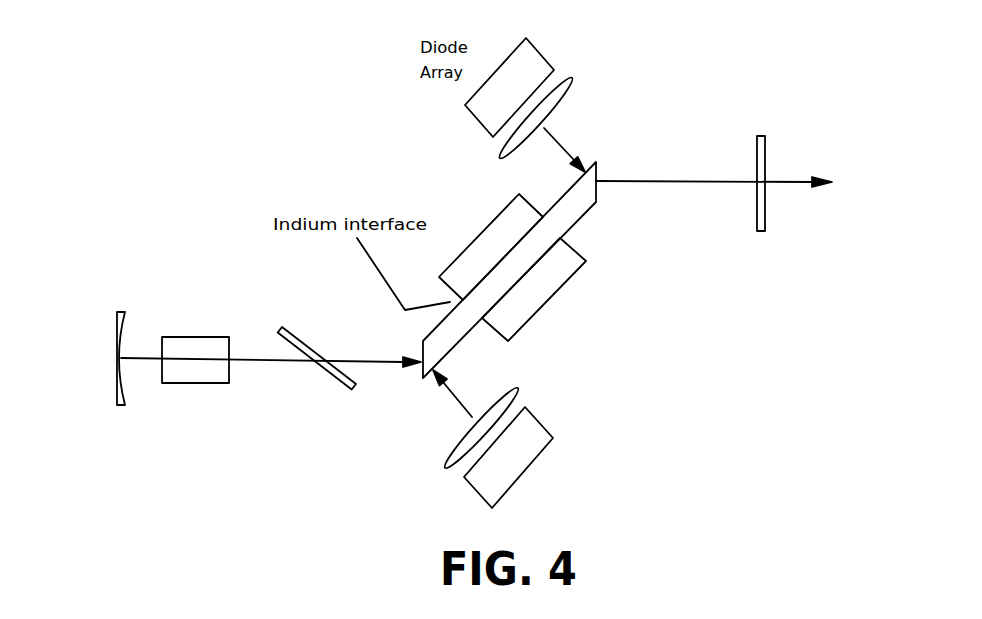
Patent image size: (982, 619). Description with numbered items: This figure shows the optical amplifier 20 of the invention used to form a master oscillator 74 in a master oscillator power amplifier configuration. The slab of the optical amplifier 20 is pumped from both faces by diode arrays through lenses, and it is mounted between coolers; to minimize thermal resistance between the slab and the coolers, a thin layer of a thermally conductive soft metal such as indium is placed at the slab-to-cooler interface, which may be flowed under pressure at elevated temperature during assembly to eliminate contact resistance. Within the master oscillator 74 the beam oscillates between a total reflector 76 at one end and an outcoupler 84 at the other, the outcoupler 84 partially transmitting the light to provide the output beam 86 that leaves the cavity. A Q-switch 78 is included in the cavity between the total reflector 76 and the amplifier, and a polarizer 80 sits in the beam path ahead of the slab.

The optical amplifier 20 is at (612, 142).
The master oscillator 74 is at (607, 355).
The total reflector 76 is at (117, 337).
The Q-switch 78 is at (193, 337).
The polarizer 80 is at (327, 377).
The outcoupler 84 is at (758, 135).
The output beam 86 is at (785, 178).